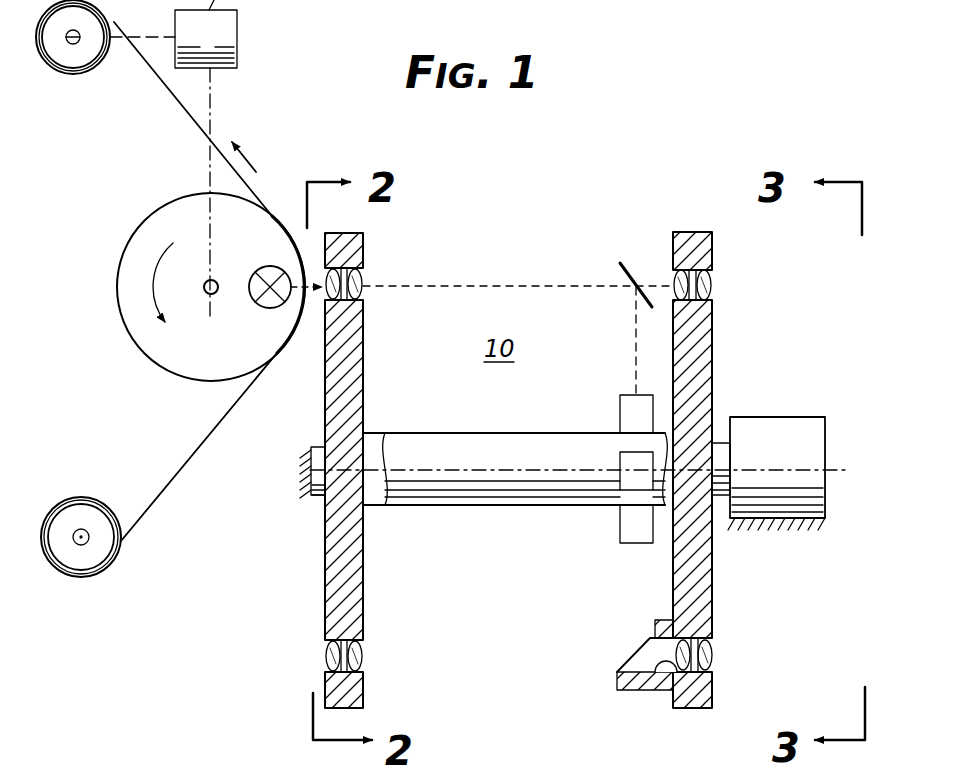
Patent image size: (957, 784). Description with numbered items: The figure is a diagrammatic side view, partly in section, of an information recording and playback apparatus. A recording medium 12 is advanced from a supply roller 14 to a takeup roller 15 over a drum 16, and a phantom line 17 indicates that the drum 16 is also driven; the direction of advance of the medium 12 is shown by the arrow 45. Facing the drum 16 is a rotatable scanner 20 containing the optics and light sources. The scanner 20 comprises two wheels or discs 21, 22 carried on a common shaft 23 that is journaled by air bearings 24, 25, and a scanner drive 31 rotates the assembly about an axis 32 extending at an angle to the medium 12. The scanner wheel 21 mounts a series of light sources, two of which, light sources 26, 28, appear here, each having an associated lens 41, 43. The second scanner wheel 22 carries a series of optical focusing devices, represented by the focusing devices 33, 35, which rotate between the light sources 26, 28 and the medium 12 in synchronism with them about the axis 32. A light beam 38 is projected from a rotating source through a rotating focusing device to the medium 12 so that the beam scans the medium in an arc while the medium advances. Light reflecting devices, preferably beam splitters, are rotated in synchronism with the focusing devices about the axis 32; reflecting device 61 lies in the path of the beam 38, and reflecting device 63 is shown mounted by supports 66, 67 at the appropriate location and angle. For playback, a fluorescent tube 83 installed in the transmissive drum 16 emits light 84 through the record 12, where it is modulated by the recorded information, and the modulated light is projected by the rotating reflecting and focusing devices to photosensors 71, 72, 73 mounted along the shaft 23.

The recording medium 12 is at (175, 100).
The supply roller 14 is at (82, 497).
The takeup roller 15 is at (76, 76).
The drum 16 is at (136, 244).
The phantom line 17 is at (208, 160).
The rotatable scanner 20 is at (322, 570).
The scanner wheel 21 is at (712, 576).
The second scanner wheel 22 is at (363, 620).
The common shaft 23 is at (507, 508).
The air bearing 24 is at (722, 440).
The air bearing 25 is at (318, 446).
The light source 26 is at (712, 290).
The light source 28 is at (713, 656).
The scanner drive 31 is at (818, 405).
The axis 32 is at (456, 470).
The optical focusing device 33 is at (360, 280).
The optical focusing device 35 is at (324, 658).
The light beam 38 is at (528, 283).
The lens 41 is at (676, 282).
The lens 43 is at (663, 688).
The arrow 45 is at (252, 166).
The light reflecting device 61 is at (622, 268).
The light reflecting device 63 is at (640, 648).
The support 66 is at (620, 690).
The support 67 is at (662, 620).
The photosensor 71 is at (620, 404).
The photosensor 72 is at (612, 460).
The photosensor 73 is at (620, 532).
The fluorescent tube 83 is at (270, 268).
The light 84 is at (298, 298).